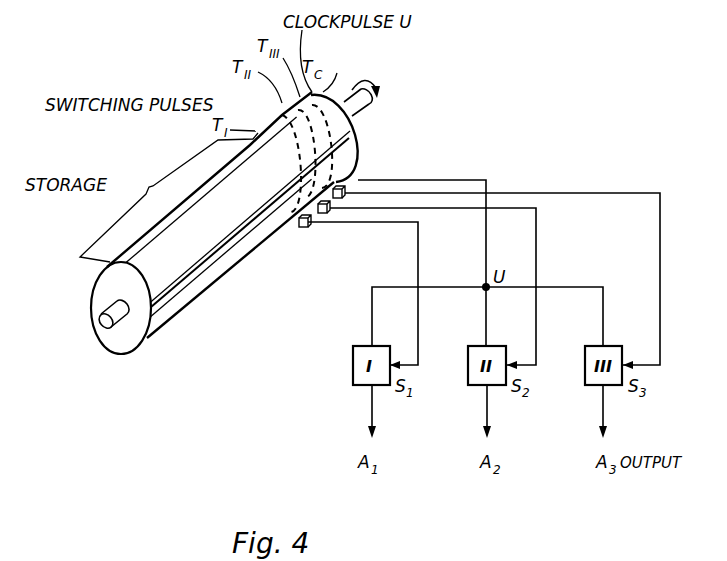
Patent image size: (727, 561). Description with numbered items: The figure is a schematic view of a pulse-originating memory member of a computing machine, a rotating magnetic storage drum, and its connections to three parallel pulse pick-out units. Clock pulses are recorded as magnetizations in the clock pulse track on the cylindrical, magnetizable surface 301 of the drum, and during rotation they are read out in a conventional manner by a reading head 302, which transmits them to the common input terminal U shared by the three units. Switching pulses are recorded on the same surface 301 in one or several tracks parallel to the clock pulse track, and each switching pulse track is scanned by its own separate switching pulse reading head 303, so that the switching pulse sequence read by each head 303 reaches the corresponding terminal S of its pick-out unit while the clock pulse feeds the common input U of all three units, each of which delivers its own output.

The cylindrical surface 301 is at (351, 148).
The reading head 302 is at (361, 176).
The switching pulse reading head 303 is at (128, 337).